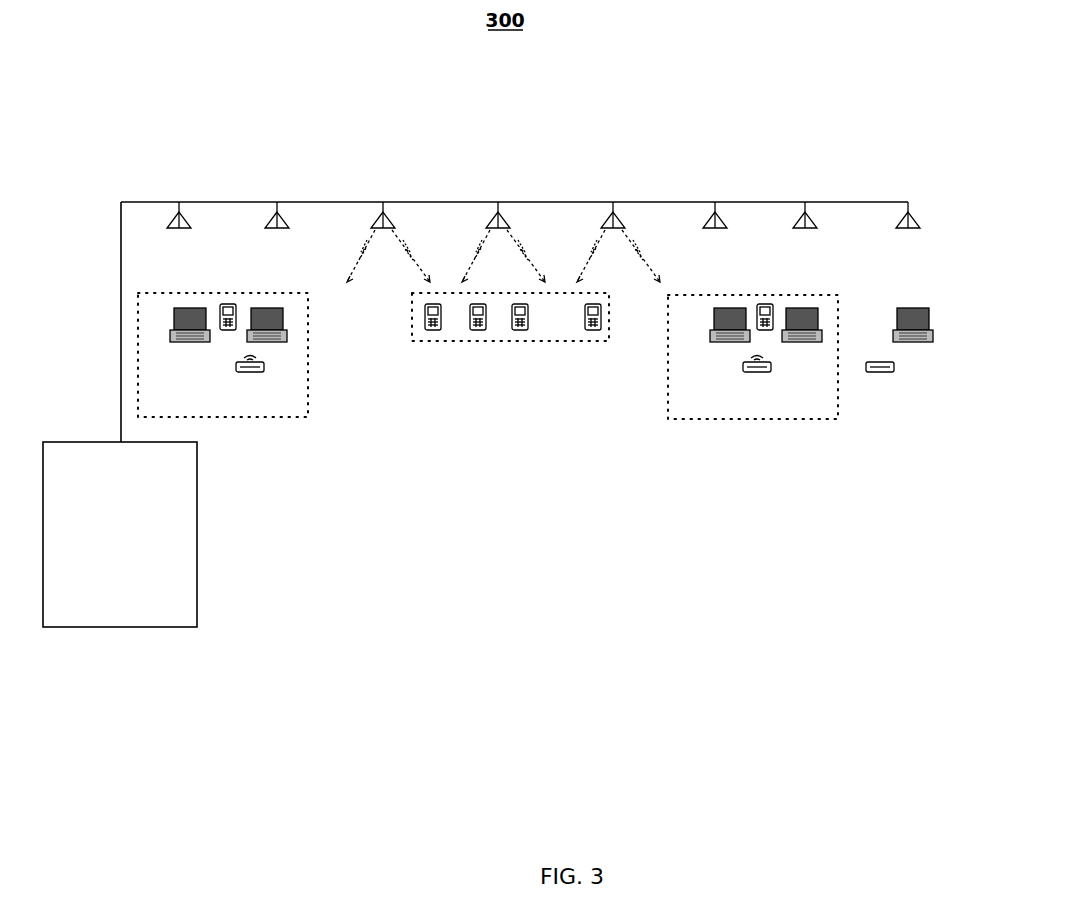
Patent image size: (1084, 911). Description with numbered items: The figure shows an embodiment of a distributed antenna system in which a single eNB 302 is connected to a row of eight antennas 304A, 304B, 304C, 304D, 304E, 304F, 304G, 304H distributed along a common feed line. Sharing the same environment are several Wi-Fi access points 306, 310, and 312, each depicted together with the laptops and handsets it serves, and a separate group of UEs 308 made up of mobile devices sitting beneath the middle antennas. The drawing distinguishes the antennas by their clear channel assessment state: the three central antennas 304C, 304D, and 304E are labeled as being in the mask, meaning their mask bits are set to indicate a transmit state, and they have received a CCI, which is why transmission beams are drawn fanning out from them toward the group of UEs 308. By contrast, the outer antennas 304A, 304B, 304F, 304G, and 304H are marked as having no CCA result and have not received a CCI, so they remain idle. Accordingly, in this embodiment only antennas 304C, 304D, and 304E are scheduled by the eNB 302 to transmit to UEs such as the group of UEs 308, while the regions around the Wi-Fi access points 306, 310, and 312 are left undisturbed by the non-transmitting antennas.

The eNB 302 is at (185, 628).
The antenna 304A is at (183, 226).
The antenna 304B is at (280, 226).
The antenna 304C is at (385, 203).
The antenna 304D is at (500, 203).
The antenna 304E is at (615, 203).
The antenna 304F is at (718, 226).
The antenna 304G is at (808, 226).
The antenna 304H is at (910, 226).
The Wi-Fi access point 306 is at (312, 418).
The group of UEs 308 is at (552, 341).
The Wi-Fi access point 310 is at (782, 420).
The Wi-Fi access point 312 is at (898, 395).